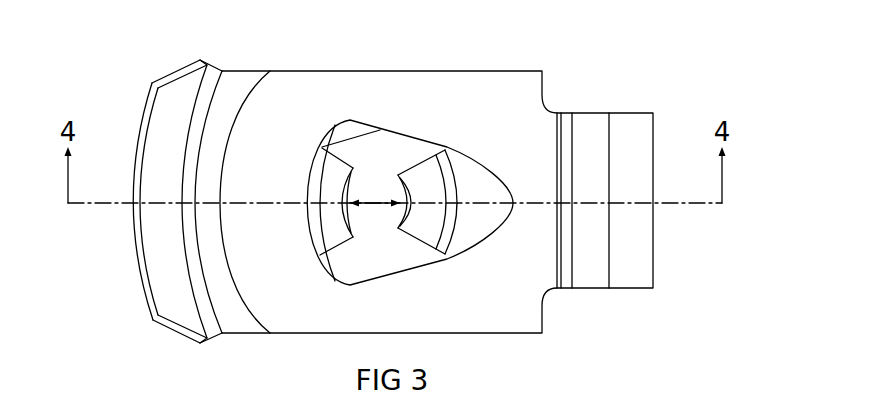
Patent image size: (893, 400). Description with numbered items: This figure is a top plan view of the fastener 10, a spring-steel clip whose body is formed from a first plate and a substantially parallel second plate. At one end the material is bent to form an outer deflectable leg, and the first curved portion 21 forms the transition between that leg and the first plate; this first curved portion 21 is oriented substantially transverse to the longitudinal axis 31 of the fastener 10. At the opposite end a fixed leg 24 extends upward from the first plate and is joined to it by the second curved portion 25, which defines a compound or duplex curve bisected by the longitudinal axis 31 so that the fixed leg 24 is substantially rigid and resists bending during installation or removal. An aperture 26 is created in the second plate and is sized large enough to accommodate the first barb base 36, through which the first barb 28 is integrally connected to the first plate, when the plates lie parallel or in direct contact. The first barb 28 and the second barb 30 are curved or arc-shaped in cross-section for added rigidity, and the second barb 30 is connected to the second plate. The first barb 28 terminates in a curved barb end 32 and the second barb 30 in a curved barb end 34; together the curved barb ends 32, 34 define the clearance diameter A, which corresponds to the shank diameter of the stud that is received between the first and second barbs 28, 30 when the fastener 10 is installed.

The fastener 10 is at (552, 62).
The first curved portion 21 is at (555, 147).
The fixed leg 24 is at (168, 327).
The second curved portion 25 is at (246, 115).
The aperture 26 is at (482, 240).
The first barb 28 is at (418, 227).
The second barb 30 is at (322, 148).
The longitudinal axis 31 is at (669, 202).
The curved barb end 32 is at (399, 214).
The curved barb end 34 is at (350, 192).
The first barb base 36 is at (458, 172).
The clearance diameter A is at (380, 203).